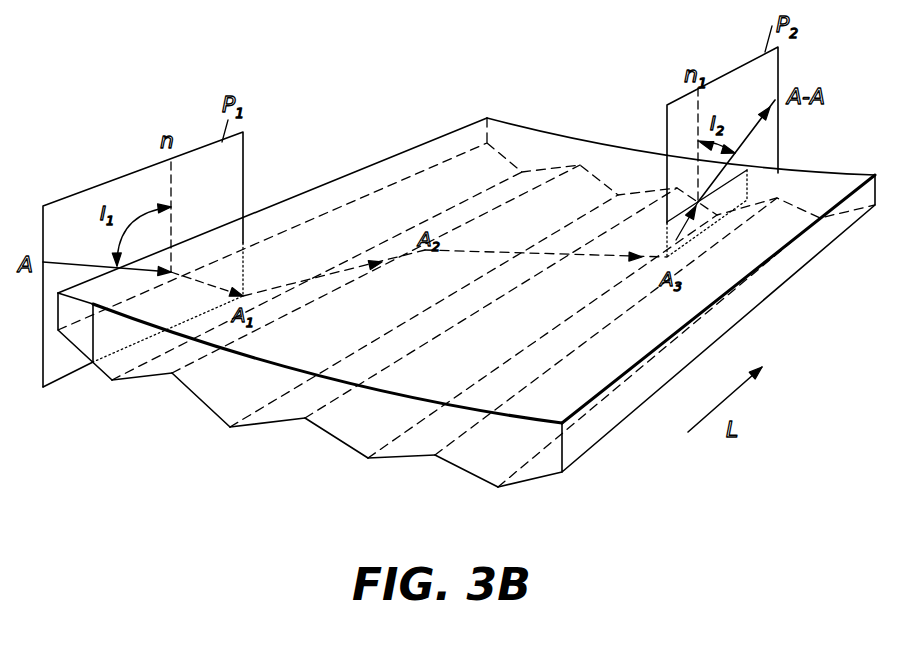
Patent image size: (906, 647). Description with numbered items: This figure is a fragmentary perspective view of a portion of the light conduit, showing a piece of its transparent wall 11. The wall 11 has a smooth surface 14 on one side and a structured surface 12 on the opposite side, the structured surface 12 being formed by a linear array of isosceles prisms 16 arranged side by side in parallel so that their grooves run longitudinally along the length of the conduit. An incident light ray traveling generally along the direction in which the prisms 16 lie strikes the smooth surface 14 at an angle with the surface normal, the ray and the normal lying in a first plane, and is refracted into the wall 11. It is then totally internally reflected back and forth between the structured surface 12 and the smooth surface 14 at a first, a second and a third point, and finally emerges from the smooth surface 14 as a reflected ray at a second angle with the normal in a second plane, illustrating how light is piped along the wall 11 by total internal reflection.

The wall 11 is at (607, 420).
The structured surface 12 is at (265, 423).
The smooth surface 14 is at (565, 147).
The isosceles prisms 16 is at (230, 425).